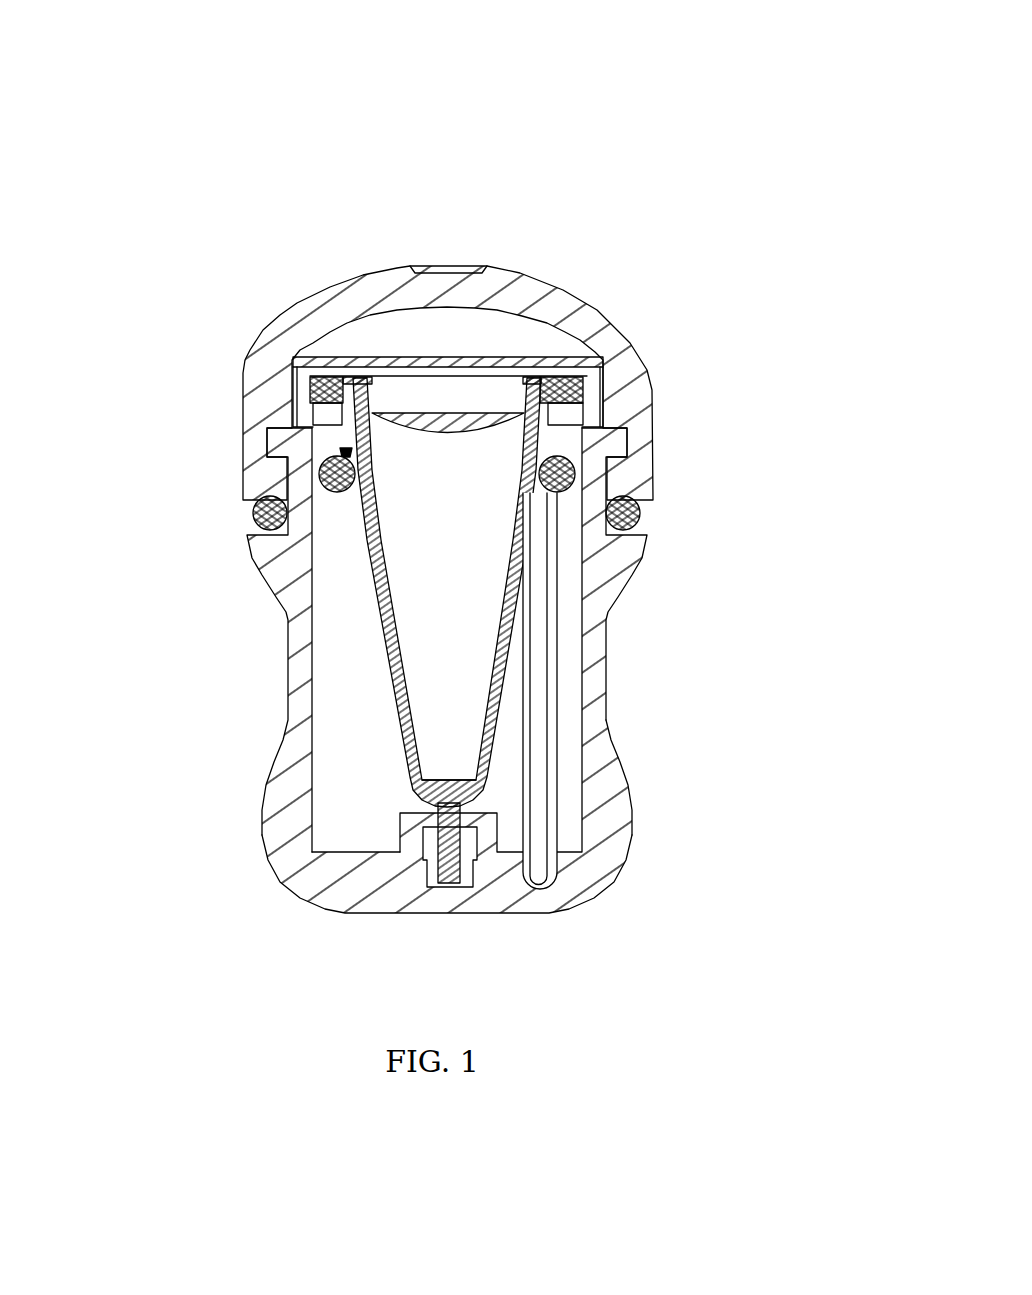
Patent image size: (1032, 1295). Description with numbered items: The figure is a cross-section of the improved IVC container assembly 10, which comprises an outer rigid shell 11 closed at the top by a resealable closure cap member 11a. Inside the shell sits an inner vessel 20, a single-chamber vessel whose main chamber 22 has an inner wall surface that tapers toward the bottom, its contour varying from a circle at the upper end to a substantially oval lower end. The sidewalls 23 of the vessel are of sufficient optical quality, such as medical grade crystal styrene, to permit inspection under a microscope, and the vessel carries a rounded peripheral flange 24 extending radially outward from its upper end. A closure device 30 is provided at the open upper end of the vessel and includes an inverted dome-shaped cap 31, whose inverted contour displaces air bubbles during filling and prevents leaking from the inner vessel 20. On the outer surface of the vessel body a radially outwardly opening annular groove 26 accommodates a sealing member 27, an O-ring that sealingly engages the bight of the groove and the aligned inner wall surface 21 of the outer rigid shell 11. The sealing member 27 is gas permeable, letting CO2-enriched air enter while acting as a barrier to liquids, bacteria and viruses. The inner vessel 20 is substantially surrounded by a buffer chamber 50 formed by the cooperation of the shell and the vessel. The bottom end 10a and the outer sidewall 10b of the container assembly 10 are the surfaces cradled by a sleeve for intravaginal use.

The IVC container assembly 10 is at (179, 605).
The bottom end 10a is at (241, 894).
The outer sidewall 10b is at (635, 638).
The outer rigid shell 11 is at (625, 776).
The resealable closure cap member 11a is at (549, 256).
The inner vessel 20 is at (520, 713).
The inner wall surface 21 is at (298, 753).
The main chamber 22 is at (419, 656).
The sidewalls 23 is at (407, 615).
The rounded peripheral flange 24 is at (305, 398).
The annular groove 26 is at (352, 438).
The sealing member 27 is at (585, 467).
The closure device 30 is at (614, 377).
The inverted dome-shaped cap 31 is at (443, 407).
The buffer chamber 50 is at (341, 808).